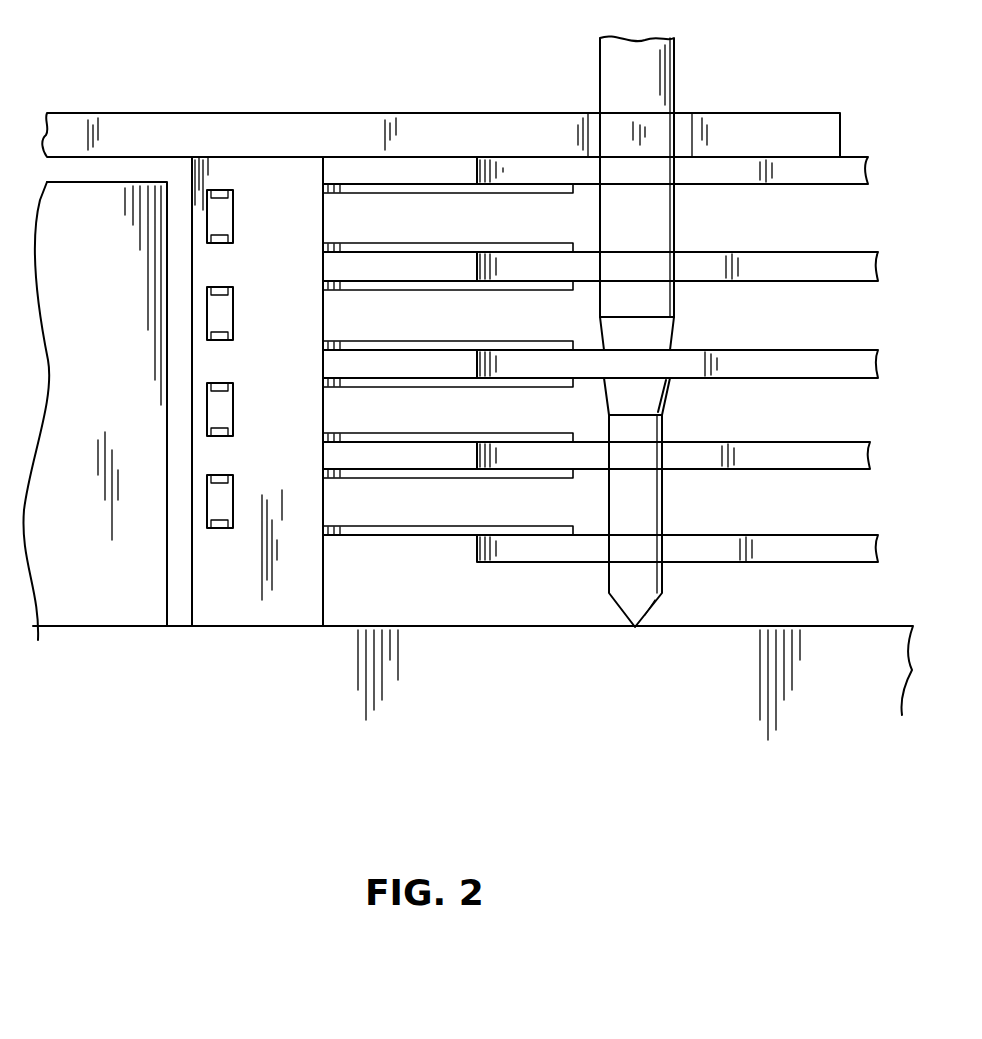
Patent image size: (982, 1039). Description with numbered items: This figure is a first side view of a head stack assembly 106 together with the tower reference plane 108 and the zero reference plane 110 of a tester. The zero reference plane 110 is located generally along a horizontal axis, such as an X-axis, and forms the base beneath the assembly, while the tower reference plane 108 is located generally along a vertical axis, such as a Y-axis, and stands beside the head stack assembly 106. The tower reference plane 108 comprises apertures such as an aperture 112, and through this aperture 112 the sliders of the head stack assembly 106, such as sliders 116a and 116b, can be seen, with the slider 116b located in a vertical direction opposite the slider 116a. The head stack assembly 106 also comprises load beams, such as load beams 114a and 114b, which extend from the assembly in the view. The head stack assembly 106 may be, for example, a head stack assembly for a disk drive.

The head stack assembly 106 is at (533, 170).
The tower reference plane 108 is at (297, 168).
The zero reference plane 110 is at (825, 626).
The aperture 112 is at (232, 490).
The load beam 114a is at (407, 535).
The load beam 114b is at (400, 472).
The slider 116a is at (207, 522).
The slider 116b is at (205, 486).